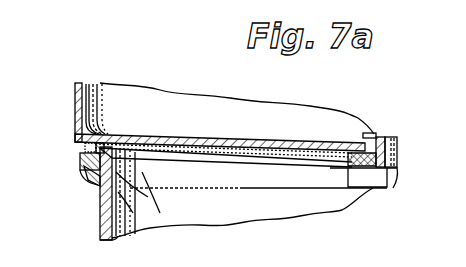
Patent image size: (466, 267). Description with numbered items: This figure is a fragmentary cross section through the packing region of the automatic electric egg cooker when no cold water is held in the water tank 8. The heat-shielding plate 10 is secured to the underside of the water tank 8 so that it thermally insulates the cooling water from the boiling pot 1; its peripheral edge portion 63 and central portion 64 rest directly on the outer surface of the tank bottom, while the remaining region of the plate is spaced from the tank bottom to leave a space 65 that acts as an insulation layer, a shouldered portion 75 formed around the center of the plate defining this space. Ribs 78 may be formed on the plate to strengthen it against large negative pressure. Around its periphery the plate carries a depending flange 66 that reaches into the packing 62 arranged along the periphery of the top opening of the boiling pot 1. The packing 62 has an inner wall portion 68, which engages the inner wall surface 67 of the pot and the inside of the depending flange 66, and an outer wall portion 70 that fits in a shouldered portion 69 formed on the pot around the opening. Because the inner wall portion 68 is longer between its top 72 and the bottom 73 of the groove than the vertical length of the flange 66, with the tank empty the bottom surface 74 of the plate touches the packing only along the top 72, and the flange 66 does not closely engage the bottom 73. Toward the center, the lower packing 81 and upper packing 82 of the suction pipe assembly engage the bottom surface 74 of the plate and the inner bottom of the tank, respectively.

The boiling pot 1 is at (100, 225).
The water tank 8 is at (75, 97).
The heat-shielding plate 10 is at (214, 185).
The packing 62 is at (133, 213).
The peripheral edge portion 63 is at (162, 148).
The central portion 64 is at (365, 150).
The space 65 is at (325, 162).
The depending flange 66 is at (88, 146).
The inner wall surface 67 is at (113, 236).
The inner wall portion 68 is at (160, 213).
The shouldered portion 69 is at (81, 174).
The outer wall portion 70 is at (80, 158).
The top 72 is at (123, 160).
The bottom 73 is at (91, 184).
The bottom surface 74 is at (125, 138).
The shouldered portion 75 is at (347, 185).
The ribs 78 is at (274, 162).
The lower packing 81 is at (387, 172).
The upper packing 82 is at (386, 137).